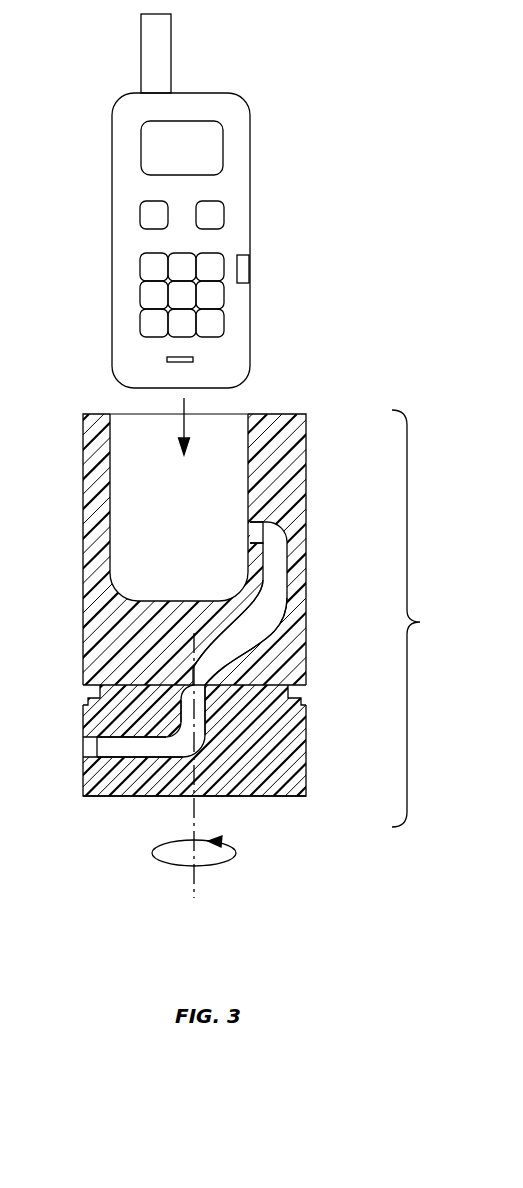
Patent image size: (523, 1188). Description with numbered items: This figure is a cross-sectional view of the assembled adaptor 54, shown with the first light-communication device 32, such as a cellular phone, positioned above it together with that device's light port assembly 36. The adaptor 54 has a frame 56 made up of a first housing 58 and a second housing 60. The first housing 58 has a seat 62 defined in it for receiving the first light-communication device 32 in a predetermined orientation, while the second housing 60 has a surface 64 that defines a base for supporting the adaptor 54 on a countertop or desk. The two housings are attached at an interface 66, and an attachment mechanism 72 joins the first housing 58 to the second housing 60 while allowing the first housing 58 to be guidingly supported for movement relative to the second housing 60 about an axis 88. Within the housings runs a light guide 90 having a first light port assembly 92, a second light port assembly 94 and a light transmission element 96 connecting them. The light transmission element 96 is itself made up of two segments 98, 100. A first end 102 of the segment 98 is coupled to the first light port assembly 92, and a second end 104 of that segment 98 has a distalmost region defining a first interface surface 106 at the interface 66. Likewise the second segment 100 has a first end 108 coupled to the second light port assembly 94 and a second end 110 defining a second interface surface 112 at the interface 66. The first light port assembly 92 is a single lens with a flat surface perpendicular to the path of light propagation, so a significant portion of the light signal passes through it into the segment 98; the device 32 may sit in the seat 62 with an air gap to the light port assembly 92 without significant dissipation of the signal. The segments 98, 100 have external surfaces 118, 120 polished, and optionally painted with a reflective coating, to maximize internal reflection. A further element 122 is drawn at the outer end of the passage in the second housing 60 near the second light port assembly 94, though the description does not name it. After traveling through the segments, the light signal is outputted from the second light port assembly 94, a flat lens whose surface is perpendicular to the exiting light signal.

The first light-communication device 32 is at (238, 170).
The light port assembly 36 is at (244, 268).
The adaptor 54 is at (305, 402).
The frame 56 is at (450, 632).
The first housing 58 is at (312, 526).
The second housing 60 is at (297, 777).
The seat 62 is at (190, 509).
The surface 64 is at (273, 797).
The interface 66 is at (270, 686).
The attachment mechanism 72 is at (70, 704).
The axis 88 is at (196, 888).
The light guide 90 is at (270, 645).
The first light port assembly 92 is at (250, 530).
The second light port assembly 94 is at (85, 753).
The light transmission element 96 is at (272, 620).
The first light transmission element segment 98 is at (289, 569).
The second light transmission element segment 100 is at (108, 760).
The first end 102 is at (270, 531).
The second end 104 is at (176, 658).
The first interface surface 106 is at (187, 680).
The first end 108 is at (83, 796).
The second end 110 is at (200, 718).
The second interface surface 112 is at (153, 697).
The external surface 118 is at (300, 598).
The external surface 120 is at (167, 757).
The plug 122 is at (85, 744).